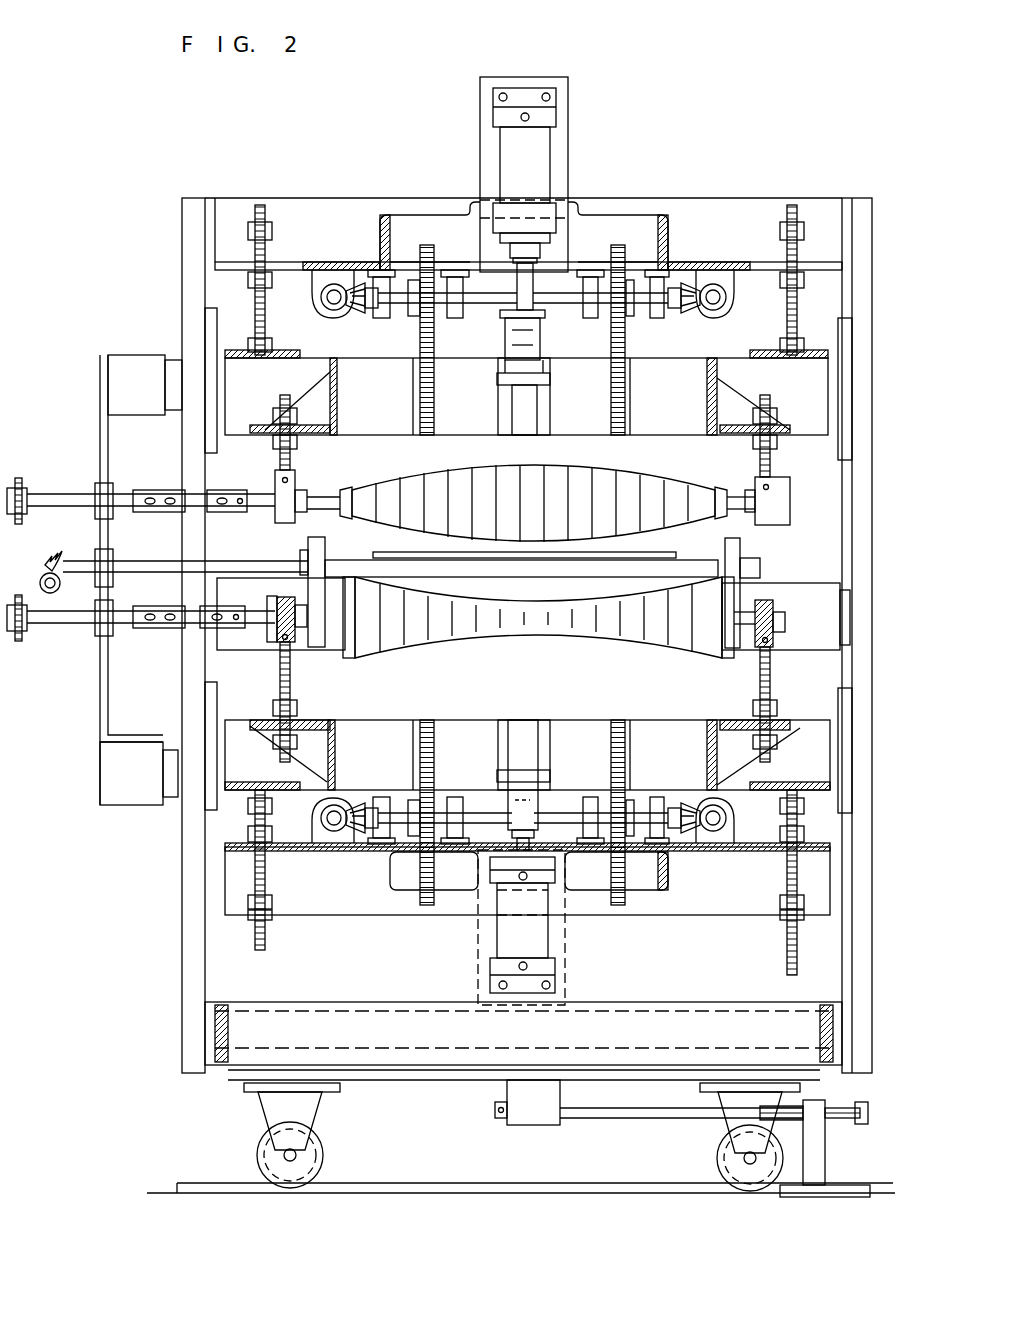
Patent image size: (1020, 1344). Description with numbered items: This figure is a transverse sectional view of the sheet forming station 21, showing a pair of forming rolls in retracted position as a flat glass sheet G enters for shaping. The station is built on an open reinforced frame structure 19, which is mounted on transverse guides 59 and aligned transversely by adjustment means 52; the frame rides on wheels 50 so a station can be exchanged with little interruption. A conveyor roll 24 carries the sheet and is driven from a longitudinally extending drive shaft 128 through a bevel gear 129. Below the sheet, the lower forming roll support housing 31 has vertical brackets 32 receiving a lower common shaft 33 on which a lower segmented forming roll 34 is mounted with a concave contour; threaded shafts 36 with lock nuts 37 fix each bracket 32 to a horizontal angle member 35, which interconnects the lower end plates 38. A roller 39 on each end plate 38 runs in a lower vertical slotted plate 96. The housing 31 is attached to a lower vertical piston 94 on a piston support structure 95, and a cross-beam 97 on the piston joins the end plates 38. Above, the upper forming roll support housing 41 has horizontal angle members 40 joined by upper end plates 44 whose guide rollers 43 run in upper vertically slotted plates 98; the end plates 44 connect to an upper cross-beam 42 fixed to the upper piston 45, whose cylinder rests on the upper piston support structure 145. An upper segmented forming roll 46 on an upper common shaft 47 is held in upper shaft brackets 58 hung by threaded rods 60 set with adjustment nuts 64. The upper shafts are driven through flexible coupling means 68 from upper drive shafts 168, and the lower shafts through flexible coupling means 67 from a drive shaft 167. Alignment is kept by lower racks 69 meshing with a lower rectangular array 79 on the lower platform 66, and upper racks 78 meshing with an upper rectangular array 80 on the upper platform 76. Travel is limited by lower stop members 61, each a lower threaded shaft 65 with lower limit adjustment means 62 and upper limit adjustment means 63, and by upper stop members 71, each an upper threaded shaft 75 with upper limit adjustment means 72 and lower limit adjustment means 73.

The open reinforced frame structure 19 is at (152, 220).
The sheet forming station 21 is at (602, 151).
The upper piston 45 is at (510, 150).
The upper piston support structure 145 is at (573, 210).
The lower limit adjustment means 73 is at (805, 228).
The upper limit adjustment means 72 is at (805, 270).
The upper threaded shaft 75 is at (790, 320).
The upper platform 76 is at (745, 265).
The upper stop member 71 is at (287, 316).
The upper rack 78 is at (420, 340).
The upper rectangular array of rods and gears 80 is at (452, 319).
The upper forming roll support housing 41 is at (554, 344).
The upper cross-beam 42 is at (540, 385).
The upper horizontal angle member 40 is at (337, 401).
The upper end plate 44 is at (672, 413).
The upper guide roller 43 is at (215, 370).
The upper vertically slotted plate 98 is at (205, 430).
The adjustment nut 64 is at (259, 432).
The externally threaded rod 60 is at (758, 465).
The upper common shaft 47 is at (310, 497).
The upper shaft bracket 58 is at (790, 492).
The upper segmented forming roll 46 is at (560, 465).
The glass sheet G is at (378, 551).
The conveyor roll 24 is at (275, 562).
The drive shaft 128 is at (45, 580).
The bevel gear 129 is at (50, 562).
The upper drive shaft 168 is at (80, 495).
The flexible coupling means 68 is at (190, 490).
The lower drive shaft 167 is at (80, 618).
The flexible coupling means 67 is at (190, 622).
The vertical bracket 32 is at (270, 640).
The lower common shaft 33 is at (300, 640).
The lower segmented forming roll 34 is at (520, 635).
The threaded shaft 36 is at (290, 688).
The lock nut 37 is at (312, 714).
The horizontal angle member 35 is at (340, 752).
The lower end plate 38 is at (587, 777).
The cross-beam 97 is at (540, 750).
The lower rack 69 is at (440, 730).
The lower rectangular array of connecting rods and gears 79 is at (490, 795).
The lower forming roll support housing 31 is at (316, 803).
The roller 39 is at (215, 758).
The lower vertical slotted plate 96 is at (205, 818).
The lower limit adjustment means 62 is at (250, 833).
The lower stop member 61 is at (242, 874).
The lower platform 66 is at (765, 870).
The lower threaded shaft 65 is at (268, 880).
The upper limit adjustment means 63 is at (270, 916).
The lower vertical piston 94 is at (505, 940).
The piston support structure 95 is at (475, 903).
The caster wheel 50 is at (330, 1145).
The adjustment means 52 is at (840, 1110).
The transverse guide 59 is at (430, 1185).